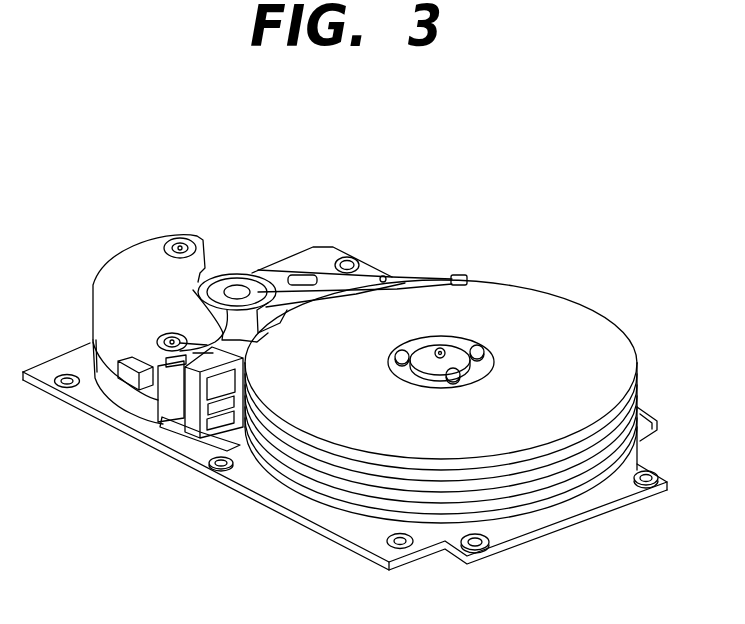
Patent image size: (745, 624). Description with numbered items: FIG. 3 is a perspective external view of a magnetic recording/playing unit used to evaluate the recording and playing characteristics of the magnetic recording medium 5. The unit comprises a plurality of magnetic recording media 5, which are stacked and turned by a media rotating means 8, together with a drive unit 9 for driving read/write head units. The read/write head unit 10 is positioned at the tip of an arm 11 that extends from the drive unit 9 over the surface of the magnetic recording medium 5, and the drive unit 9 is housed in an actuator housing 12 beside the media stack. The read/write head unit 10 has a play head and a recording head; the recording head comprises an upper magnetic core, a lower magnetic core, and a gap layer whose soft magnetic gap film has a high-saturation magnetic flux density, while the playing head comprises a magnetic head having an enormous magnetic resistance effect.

The magnetic recording medium 5 is at (597, 332).
The media rotating means 8 is at (443, 352).
The drive unit 9 is at (238, 290).
The read/write head unit 10 is at (458, 275).
The actuator arm 11 is at (303, 278).
The voice coil motor housing 12 is at (123, 272).